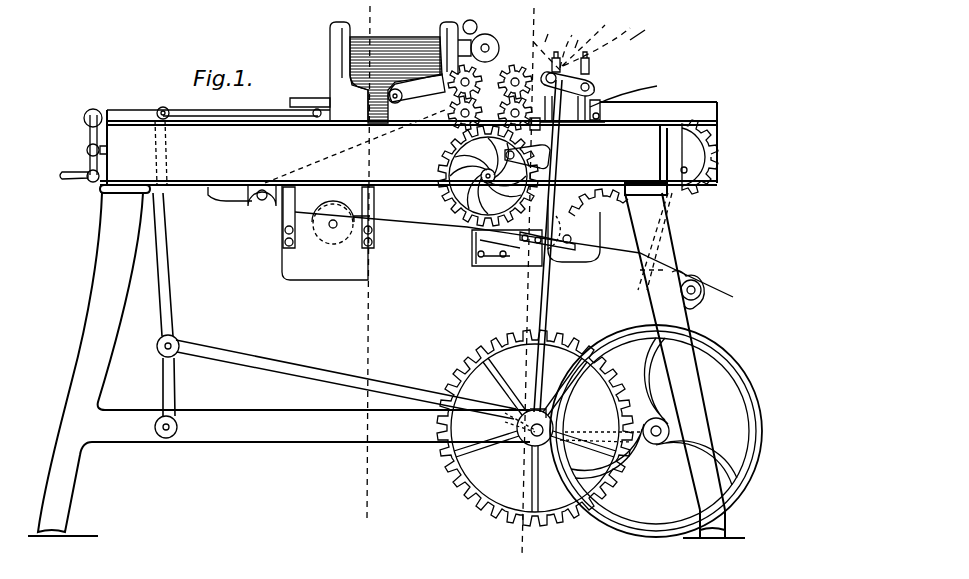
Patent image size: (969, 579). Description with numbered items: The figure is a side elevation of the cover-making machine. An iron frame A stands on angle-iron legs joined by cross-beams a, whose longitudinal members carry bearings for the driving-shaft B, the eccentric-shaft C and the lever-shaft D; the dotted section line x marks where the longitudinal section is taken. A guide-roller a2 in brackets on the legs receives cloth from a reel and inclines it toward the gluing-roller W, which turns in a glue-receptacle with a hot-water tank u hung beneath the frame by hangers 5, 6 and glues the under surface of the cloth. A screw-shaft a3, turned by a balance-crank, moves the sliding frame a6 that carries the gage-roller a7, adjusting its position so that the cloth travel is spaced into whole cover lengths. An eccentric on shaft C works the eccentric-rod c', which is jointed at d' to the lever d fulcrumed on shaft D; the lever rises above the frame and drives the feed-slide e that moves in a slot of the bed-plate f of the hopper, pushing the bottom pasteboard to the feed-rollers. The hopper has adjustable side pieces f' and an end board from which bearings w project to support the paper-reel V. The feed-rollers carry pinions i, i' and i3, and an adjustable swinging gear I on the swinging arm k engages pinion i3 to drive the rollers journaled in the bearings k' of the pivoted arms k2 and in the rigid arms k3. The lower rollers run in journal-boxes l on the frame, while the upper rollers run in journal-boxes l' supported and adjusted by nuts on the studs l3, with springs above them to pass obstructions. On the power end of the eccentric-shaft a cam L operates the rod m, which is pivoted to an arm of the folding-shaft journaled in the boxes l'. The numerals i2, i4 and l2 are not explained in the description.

The iron frame A is at (386, 320).
The cross-beams a is at (311, 426).
The guide-roller a2 is at (168, 108).
The screw-shaft a3 is at (696, 290).
The frame of gage-roller a6 is at (225, 202).
The gage-roller a7 is at (258, 207).
The driving-shaft B is at (669, 436).
The eccentric-shaft C is at (530, 444).
The eccentric-rod c' is at (346, 379).
The lever-shaft D is at (164, 438).
The lever d is at (171, 268).
The joint of eccentric-rod and lever d' is at (178, 338).
The feed-slide e is at (195, 131).
The bed-plate f is at (403, 72).
The side pieces of hopper f' is at (349, 71).
The adjustable swinging gear I is at (440, 168).
The pinions on lower feed-rollers i is at (557, 75).
The upper pinions i' is at (559, 113).
The pinion i2 is at (472, 82).
The pinion on feed-roller i3 is at (470, 113).
The bearing block i4 is at (537, 128).
The adjustable swinging arm k is at (522, 155).
The bearing k' is at (678, 204).
The arms k2 is at (416, 87).
The rigid arms k3 is at (435, 115).
The cam L is at (500, 425).
The journal-boxes l is at (593, 66).
The journal-boxes of upper rollers l' is at (575, 33).
The lever arm position l2 is at (644, 27).
The studs l3 is at (547, 30).
The rod m is at (545, 284).
The hot-water tank u is at (326, 232).
The paper-reel V is at (485, 34).
The gluing-roller W is at (514, 254).
The bearings of paper-reel w is at (471, 22).
The section line x is at (445, 288).
The hanger 5 is at (289, 217).
The hanger 6 is at (368, 217).